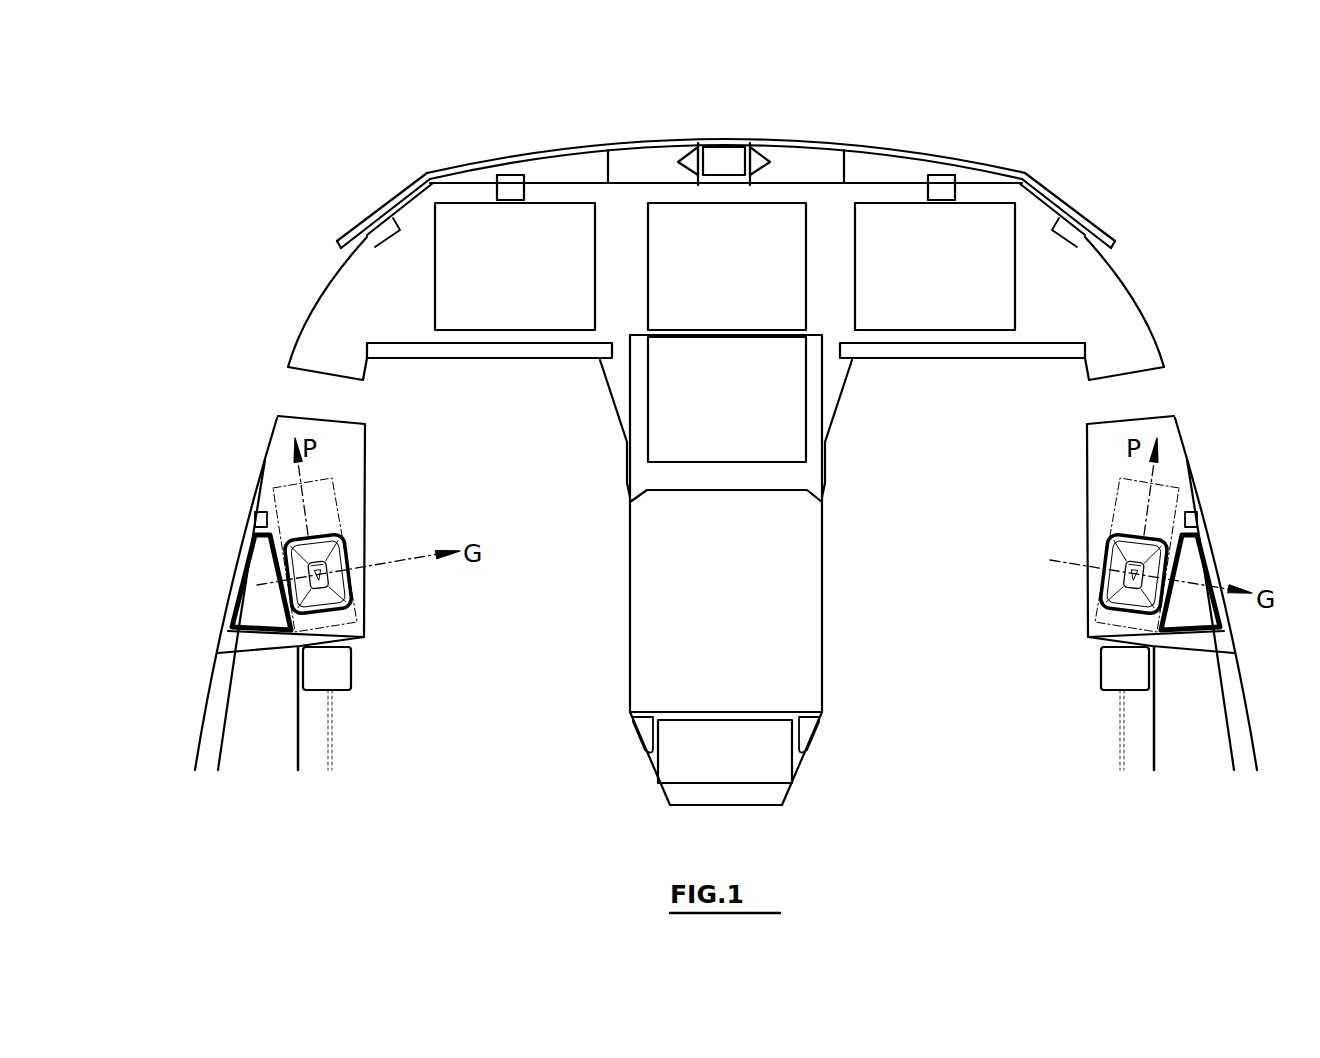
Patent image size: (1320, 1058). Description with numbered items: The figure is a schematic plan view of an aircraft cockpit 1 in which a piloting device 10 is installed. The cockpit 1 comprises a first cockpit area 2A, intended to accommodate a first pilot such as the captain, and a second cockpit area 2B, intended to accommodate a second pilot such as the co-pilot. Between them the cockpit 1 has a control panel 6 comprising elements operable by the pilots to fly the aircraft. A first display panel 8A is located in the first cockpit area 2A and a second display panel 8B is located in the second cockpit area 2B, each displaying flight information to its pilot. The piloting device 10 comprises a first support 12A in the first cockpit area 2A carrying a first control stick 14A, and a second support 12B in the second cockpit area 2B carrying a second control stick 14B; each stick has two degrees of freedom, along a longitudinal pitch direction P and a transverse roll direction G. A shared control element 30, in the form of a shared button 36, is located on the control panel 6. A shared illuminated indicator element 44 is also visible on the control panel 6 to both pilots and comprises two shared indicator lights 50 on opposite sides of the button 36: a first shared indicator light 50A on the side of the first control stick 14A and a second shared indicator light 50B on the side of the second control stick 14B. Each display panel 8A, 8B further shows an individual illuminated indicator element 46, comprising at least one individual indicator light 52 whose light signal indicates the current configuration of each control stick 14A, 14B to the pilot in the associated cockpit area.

The aircraft cockpit 1 is at (176, 262).
The first cockpit area 2A is at (488, 655).
The second cockpit area 2B is at (956, 655).
The control panel 6 is at (800, 182).
The first display panel 8A is at (400, 263).
The second display panel 8B is at (1052, 263).
The aircraft piloting device 10 is at (258, 443).
The first support 12A is at (275, 490).
The second support 12B is at (1177, 490).
The first control stick 14A is at (302, 552).
The second control stick 14B is at (1147, 542).
The shared control element 30 is at (732, 106).
The shared button 36 is at (723, 150).
The shared illuminated indicator element 44 is at (690, 122).
The individual illuminated indicator element 46 is at (521, 150).
The shared indicator lights 50 is at (732, 126).
The first shared indicator light 50A is at (680, 140).
The second shared indicator light 50B is at (768, 143).
The individual indicator light 52 is at (498, 177).